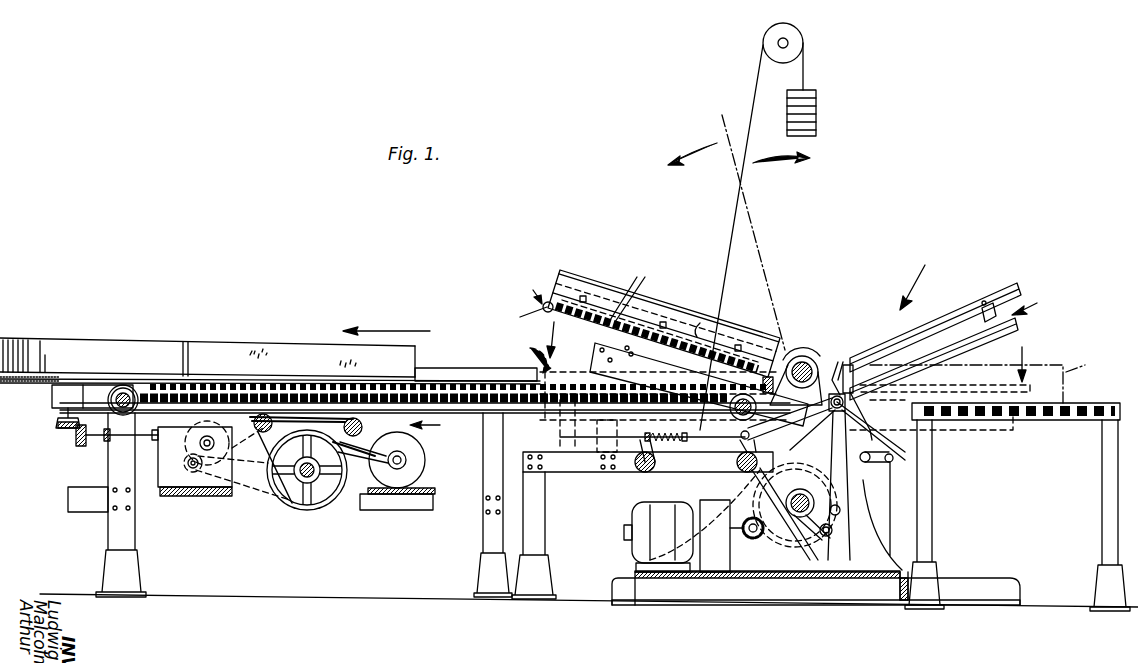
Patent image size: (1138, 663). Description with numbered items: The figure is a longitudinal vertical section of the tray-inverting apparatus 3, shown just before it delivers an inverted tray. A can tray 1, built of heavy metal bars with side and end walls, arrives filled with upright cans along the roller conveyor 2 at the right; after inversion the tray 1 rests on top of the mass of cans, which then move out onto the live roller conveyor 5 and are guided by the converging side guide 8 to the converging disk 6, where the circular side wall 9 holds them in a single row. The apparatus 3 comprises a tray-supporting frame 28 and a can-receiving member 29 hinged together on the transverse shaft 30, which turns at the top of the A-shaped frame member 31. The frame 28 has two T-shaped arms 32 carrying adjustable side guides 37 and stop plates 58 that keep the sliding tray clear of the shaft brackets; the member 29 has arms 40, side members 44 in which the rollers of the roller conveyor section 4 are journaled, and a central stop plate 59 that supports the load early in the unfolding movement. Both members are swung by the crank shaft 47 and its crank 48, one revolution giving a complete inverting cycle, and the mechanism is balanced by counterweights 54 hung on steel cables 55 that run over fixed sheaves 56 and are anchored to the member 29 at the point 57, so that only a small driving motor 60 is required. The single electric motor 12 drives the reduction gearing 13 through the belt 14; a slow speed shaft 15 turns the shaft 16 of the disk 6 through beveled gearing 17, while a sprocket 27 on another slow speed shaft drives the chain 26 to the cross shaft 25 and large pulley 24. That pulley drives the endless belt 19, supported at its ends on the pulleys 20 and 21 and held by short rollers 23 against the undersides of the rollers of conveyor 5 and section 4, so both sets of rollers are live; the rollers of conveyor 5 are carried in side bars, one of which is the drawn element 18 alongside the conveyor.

The can tray 1 is at (662, 292).
The conveyor 2 is at (1092, 405).
The inverting apparatus 3 is at (918, 280).
The roller conveyor section 4 is at (578, 313).
The live roller conveyor 5 is at (451, 387).
The converging disk 6 is at (23, 378).
The converging side guide 8 is at (292, 345).
The circular side wall 9 is at (67, 338).
The electric motor 12 is at (412, 446).
The reduction gearing 13 is at (160, 447).
The belt 14 is at (355, 470).
The slow speed shaft 15 is at (95, 440).
The shaft of the converging disk 16 is at (60, 411).
The beveled gearing 17 is at (76, 435).
The plate 18 is at (470, 370).
The endless belt 19 is at (152, 380).
The pulley or drum 20 is at (124, 385).
The pulley or drum 21 is at (713, 447).
The short rollers 23 is at (583, 400).
The large pulley 24 is at (308, 484).
The cross shaft 25 is at (300, 481).
The chain 26 is at (236, 445).
The sprocket 27 is at (196, 472).
The tray-supporting frame 28 is at (1039, 336).
The can-receiving member 29 is at (524, 289).
The transverse shaft 30 is at (812, 362).
The A-shaped frame member 31 is at (752, 492).
The arms 32 is at (1017, 326).
The side guides 37 is at (947, 312).
The arms 40 is at (594, 358).
The side members 44 is at (520, 316).
The crank shaft 47 is at (762, 478).
The crank 48 is at (808, 545).
The counterweights 54 is at (818, 101).
The steel cables 55 is at (754, 88).
The pulleys or sheaves 56 is at (805, 46).
The cable attachment point 57 is at (693, 325).
The stop plates 58 is at (840, 368).
The stop plate 59 is at (793, 355).
The driving motor 60 is at (645, 506).